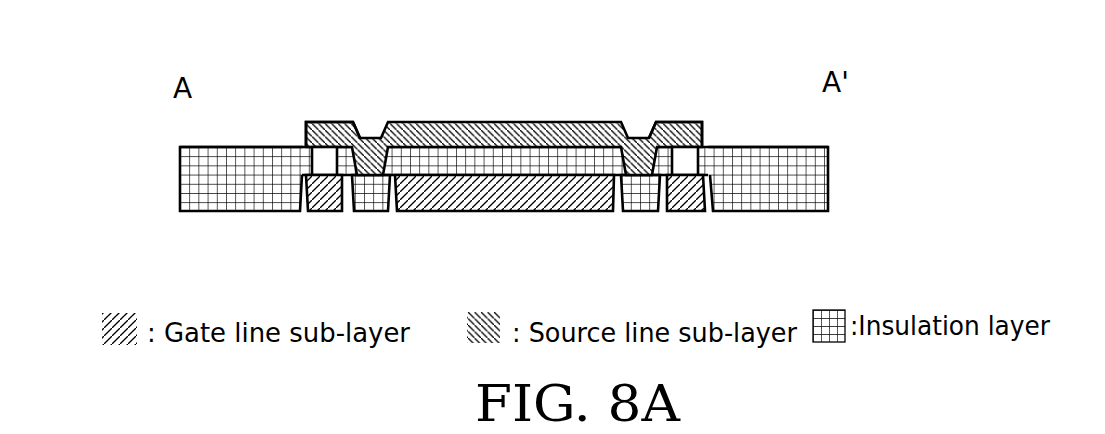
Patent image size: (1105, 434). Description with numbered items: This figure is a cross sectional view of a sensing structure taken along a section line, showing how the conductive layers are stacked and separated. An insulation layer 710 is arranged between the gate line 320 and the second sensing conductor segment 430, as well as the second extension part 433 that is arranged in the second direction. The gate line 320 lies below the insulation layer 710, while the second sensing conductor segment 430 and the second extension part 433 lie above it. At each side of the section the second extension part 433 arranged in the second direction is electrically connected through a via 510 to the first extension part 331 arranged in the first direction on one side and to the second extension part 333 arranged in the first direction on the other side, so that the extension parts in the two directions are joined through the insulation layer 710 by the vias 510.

The insulation layer 710 is at (235, 175).
The second sensing conductor segment 430 is at (500, 120).
The second extension part 433 is at (325, 121).
The via 510 is at (326, 162).
The second extension part arranged in the first direction 333 is at (328, 200).
The gate line 320 is at (510, 193).
The first extension part arranged in the first direction 331 is at (688, 205).